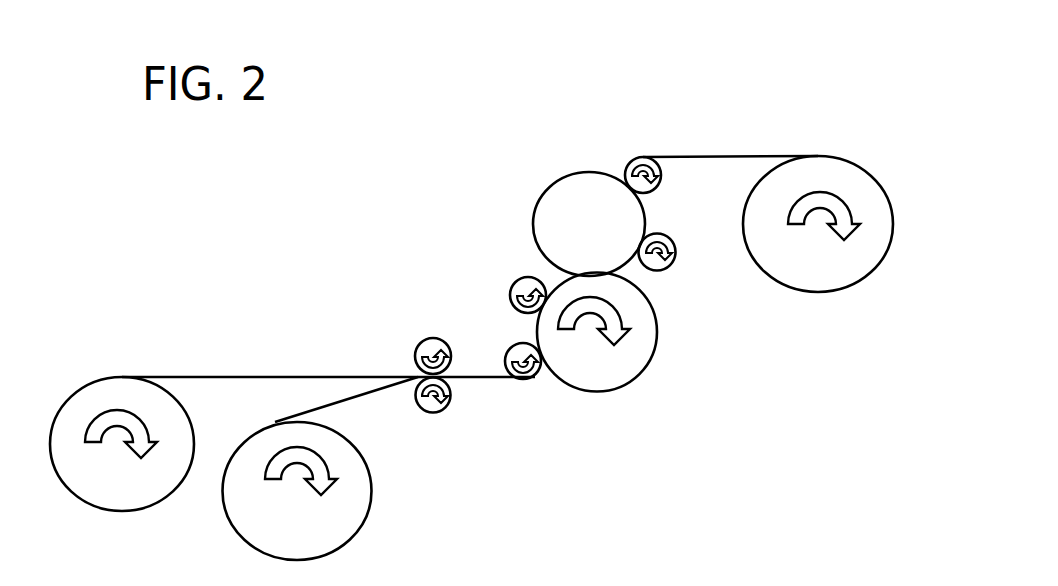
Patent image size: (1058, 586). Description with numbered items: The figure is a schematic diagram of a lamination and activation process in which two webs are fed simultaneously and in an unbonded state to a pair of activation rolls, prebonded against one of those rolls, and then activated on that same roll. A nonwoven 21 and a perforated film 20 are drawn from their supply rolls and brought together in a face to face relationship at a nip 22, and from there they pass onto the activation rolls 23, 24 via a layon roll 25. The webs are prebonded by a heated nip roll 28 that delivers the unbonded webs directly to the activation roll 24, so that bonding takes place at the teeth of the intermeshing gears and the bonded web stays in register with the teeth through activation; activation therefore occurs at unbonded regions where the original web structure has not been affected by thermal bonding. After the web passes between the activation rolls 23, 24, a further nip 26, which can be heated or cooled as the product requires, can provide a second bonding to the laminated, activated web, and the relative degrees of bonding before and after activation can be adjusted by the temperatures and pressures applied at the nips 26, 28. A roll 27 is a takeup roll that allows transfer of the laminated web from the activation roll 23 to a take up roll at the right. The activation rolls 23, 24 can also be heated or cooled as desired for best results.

The perforated film 20 is at (202, 369).
The nonwoven 21 is at (373, 415).
The nip 22 is at (409, 365).
The activation roll 23 is at (535, 179).
The activation roll 24 is at (547, 274).
The layon roll 25 is at (546, 388).
The further nip 26 is at (685, 273).
The takeup roll 27 is at (622, 148).
The heated nip roll 28 is at (496, 286).